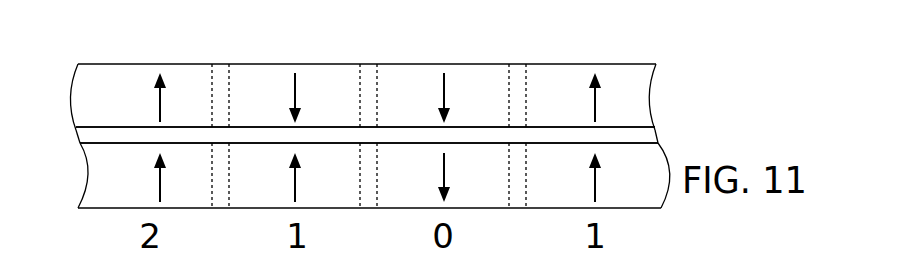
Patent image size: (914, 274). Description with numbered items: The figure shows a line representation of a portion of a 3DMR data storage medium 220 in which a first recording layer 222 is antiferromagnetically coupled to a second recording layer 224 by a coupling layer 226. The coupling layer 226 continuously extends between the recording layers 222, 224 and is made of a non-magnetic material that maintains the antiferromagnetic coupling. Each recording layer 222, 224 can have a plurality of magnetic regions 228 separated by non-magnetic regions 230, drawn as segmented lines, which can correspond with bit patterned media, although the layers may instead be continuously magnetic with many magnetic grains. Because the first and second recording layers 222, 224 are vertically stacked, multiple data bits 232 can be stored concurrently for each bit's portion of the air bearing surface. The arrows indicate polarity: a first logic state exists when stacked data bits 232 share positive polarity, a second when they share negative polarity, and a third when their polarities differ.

The 3DMR data storage medium 220 is at (97, 37).
The first recording layer 222 is at (112, 84).
The second recording layer 224 is at (122, 204).
The coupling layer 226 is at (75, 137).
The magnetic regions 228 is at (644, 61).
The non-magnetic regions 230 is at (516, 59).
The data bits 232 is at (442, 156).